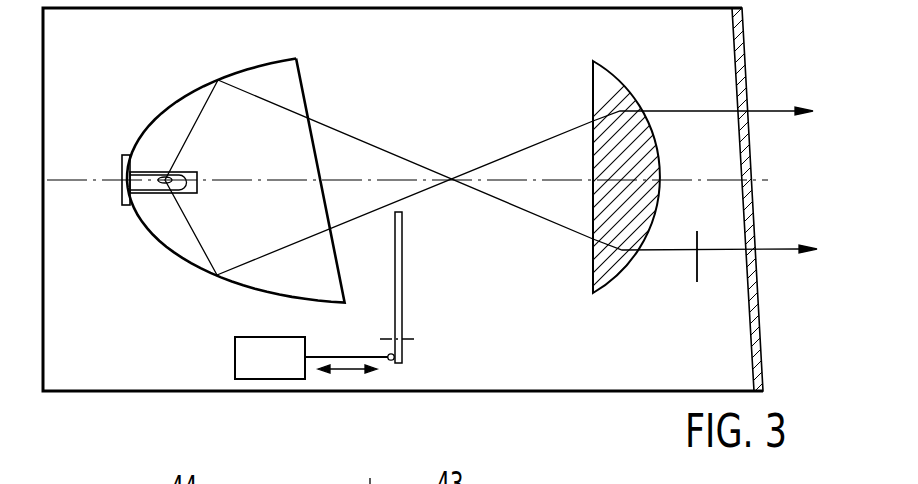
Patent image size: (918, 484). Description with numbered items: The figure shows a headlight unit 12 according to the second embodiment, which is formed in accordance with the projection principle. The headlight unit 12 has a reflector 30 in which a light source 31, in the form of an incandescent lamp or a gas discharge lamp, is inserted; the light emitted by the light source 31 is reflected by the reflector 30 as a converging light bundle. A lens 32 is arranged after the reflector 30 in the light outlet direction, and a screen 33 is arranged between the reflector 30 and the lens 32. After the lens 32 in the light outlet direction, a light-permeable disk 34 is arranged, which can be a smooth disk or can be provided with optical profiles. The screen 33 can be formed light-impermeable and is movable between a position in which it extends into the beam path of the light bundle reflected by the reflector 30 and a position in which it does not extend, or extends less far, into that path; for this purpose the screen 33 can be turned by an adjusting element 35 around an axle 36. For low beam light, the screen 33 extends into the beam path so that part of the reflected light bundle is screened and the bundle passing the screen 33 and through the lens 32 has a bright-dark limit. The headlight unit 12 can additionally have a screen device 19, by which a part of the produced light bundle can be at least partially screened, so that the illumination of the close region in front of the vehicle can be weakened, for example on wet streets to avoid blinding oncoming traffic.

The headlight unit 12 is at (117, 398).
The screen device 19 is at (695, 262).
The reflector 30 is at (188, 269).
The light source 31 is at (158, 172).
The lens 32 is at (620, 88).
The screen 33 is at (402, 300).
The light-permeable disk 34 is at (745, 68).
The adjusting element 35 is at (279, 362).
The axle 36 is at (405, 340).